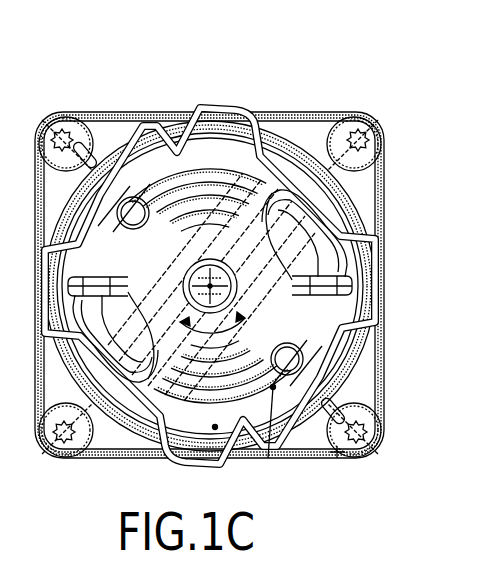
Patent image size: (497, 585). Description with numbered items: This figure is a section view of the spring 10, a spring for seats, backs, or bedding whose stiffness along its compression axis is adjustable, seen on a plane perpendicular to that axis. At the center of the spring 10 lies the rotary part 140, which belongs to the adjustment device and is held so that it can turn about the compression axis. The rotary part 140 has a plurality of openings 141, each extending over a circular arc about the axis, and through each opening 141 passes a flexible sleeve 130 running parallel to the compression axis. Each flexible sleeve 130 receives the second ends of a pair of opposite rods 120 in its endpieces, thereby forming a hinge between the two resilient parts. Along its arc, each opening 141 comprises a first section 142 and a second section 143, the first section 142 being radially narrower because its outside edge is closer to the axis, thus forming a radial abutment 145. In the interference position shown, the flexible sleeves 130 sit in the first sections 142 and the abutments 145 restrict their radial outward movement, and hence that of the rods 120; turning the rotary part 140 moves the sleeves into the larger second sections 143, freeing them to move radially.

The spring 10 is at (271, 68).
The rod 120 is at (217, 170).
The flexible sleeve 130 is at (157, 185).
The rotary part 140 is at (357, 204).
The opening 141 is at (383, 496).
The first section 142 is at (337, 457).
The second section 143 is at (215, 427).
The radial abutment 145 is at (330, 400).